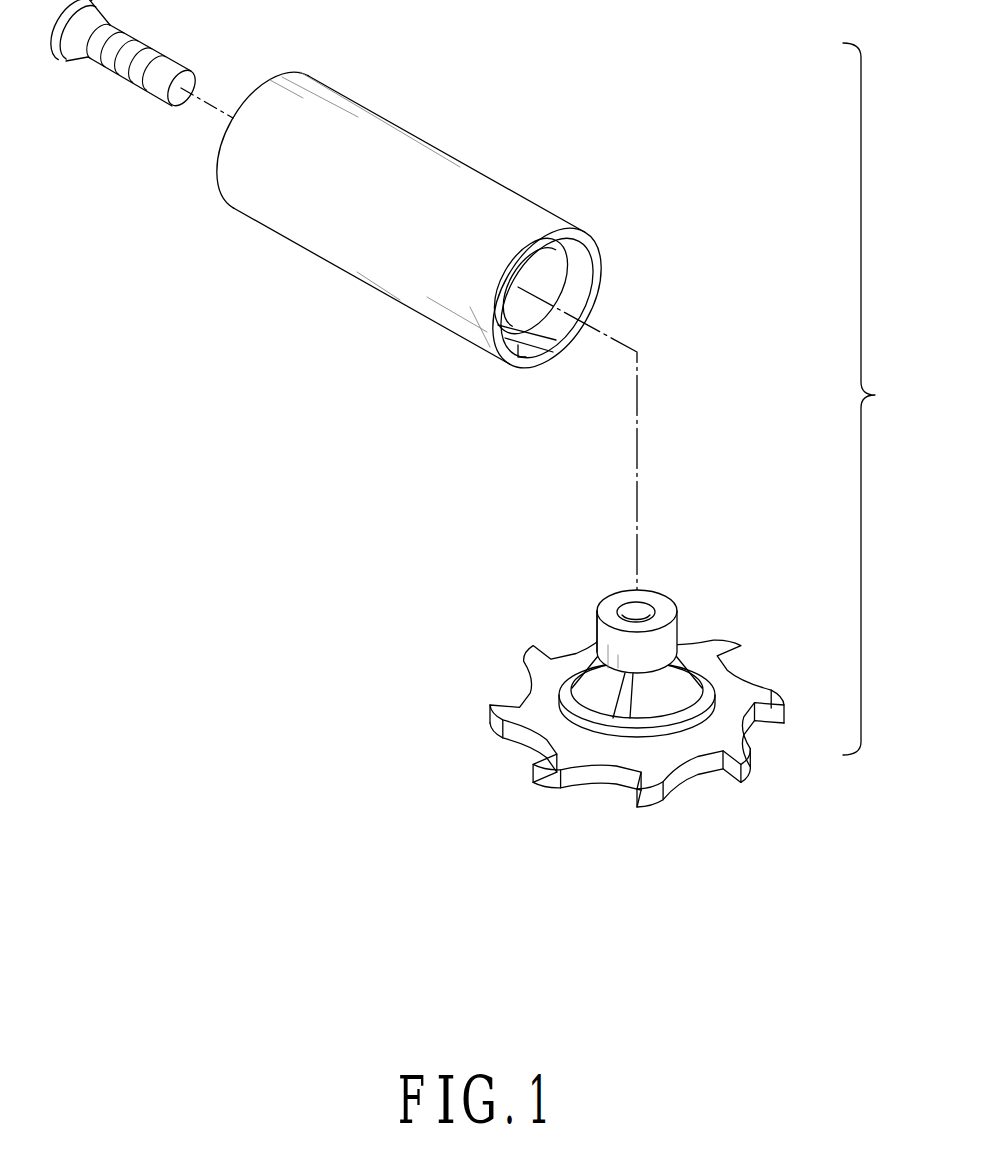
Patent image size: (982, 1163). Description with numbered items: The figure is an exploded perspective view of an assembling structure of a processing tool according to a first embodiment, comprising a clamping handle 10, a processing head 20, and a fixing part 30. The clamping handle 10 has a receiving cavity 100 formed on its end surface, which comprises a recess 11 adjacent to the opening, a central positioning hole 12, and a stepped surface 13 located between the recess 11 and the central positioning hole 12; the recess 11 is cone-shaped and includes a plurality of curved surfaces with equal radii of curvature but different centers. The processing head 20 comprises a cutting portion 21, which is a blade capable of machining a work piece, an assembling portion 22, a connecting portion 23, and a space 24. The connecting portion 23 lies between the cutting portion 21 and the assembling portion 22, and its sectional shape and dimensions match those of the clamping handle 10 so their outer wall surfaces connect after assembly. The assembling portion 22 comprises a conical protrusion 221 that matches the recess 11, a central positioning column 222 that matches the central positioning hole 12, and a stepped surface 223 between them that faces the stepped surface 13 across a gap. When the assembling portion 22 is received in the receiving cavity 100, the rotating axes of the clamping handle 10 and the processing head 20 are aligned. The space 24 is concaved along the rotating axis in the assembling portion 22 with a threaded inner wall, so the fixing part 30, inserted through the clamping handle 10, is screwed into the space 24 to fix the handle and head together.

The clamping handle 10 is at (434, 232).
The recess 11 is at (518, 356).
The central positioning hole 12 is at (530, 270).
The stepped surface 13 is at (520, 284).
The receiving cavity 100 is at (597, 310).
The processing head 20 is at (591, 669).
The cutting portion 21 is at (615, 726).
The assembling portion 22 is at (636, 590).
The connecting portion 23 is at (683, 730).
The space 24 is at (645, 612).
The protrusion 221 is at (692, 682).
The central positioning column 222 is at (598, 623).
The stepped surface 223 is at (678, 640).
The fixing part 30 is at (143, 77).